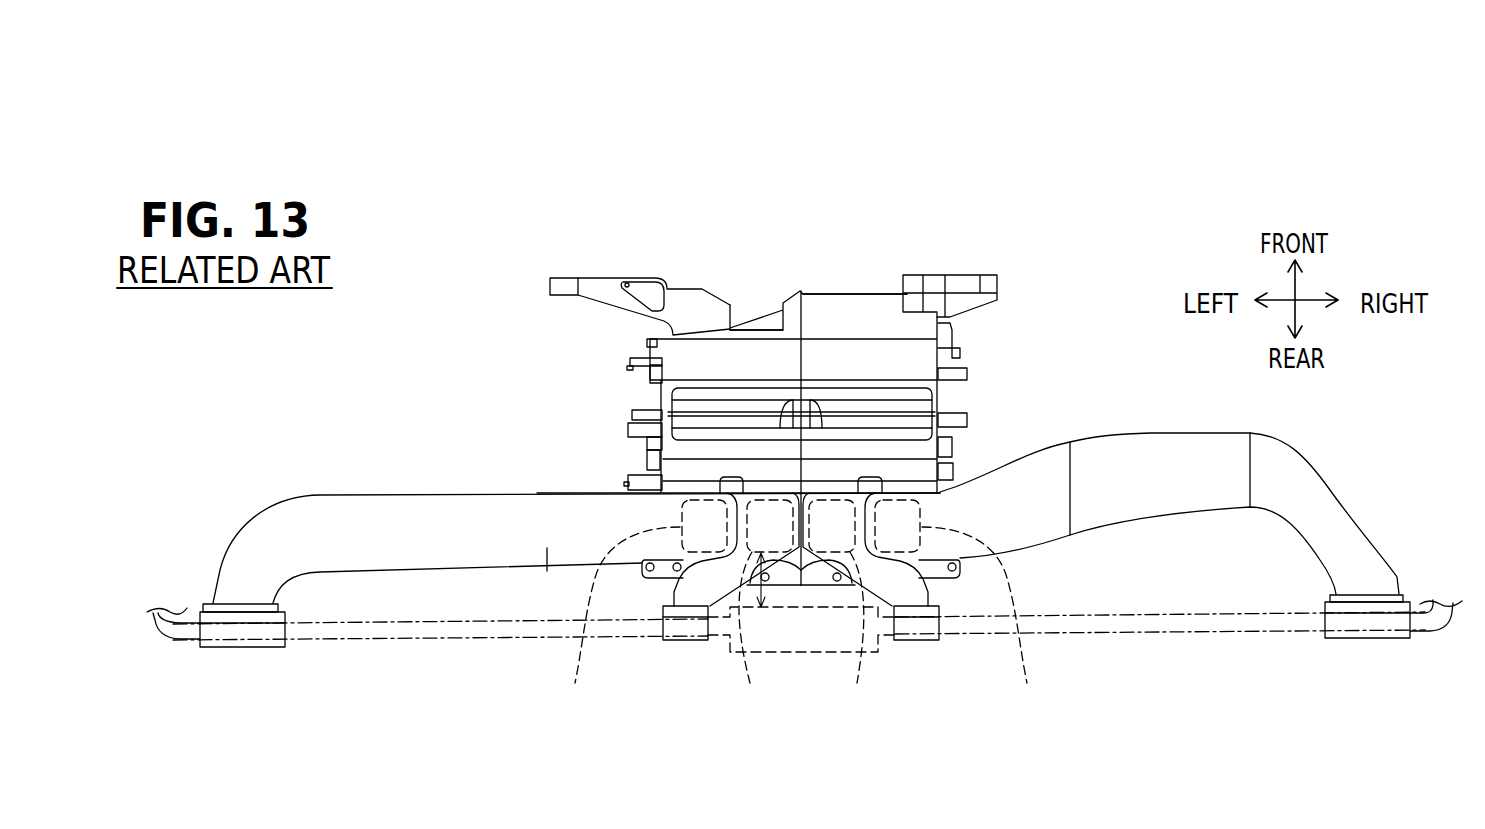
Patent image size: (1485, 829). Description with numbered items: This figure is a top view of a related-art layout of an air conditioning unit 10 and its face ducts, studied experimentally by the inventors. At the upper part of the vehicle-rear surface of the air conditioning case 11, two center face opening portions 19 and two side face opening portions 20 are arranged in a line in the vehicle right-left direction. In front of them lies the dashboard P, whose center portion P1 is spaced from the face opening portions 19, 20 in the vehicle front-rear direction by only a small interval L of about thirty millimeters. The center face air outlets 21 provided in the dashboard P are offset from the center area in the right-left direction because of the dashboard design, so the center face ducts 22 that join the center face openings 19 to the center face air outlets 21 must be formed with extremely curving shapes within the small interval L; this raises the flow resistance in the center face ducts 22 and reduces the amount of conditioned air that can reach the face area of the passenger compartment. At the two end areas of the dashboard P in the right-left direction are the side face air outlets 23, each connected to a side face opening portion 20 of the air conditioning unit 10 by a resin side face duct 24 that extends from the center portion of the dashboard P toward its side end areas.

The air conditioning unit 10 is at (618, 390).
The air conditioning case 11 is at (827, 350).
The center face opening portion 19 is at (803, 607).
The side face opening portion 20 is at (800, 607).
The center face air outlet 21 is at (697, 641).
The center face duct 22 is at (683, 588).
The side face air outlet 23 is at (250, 647).
The side face duct 24 is at (467, 512).
The dashboard P is at (1138, 623).
The center portion of the dashboard P1 is at (806, 652).
The interval L is at (760, 553).